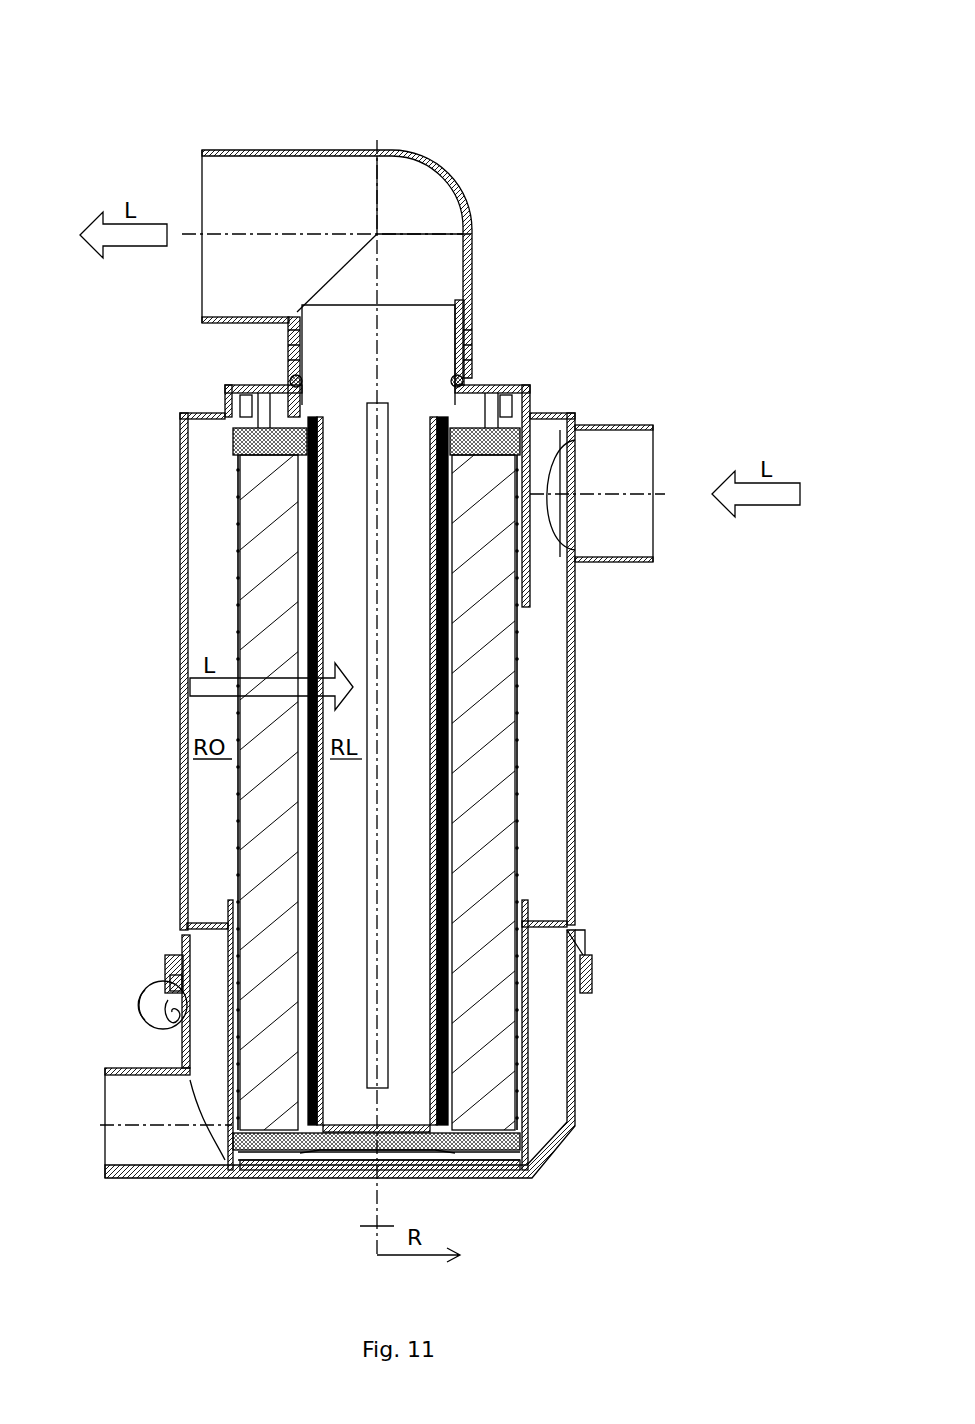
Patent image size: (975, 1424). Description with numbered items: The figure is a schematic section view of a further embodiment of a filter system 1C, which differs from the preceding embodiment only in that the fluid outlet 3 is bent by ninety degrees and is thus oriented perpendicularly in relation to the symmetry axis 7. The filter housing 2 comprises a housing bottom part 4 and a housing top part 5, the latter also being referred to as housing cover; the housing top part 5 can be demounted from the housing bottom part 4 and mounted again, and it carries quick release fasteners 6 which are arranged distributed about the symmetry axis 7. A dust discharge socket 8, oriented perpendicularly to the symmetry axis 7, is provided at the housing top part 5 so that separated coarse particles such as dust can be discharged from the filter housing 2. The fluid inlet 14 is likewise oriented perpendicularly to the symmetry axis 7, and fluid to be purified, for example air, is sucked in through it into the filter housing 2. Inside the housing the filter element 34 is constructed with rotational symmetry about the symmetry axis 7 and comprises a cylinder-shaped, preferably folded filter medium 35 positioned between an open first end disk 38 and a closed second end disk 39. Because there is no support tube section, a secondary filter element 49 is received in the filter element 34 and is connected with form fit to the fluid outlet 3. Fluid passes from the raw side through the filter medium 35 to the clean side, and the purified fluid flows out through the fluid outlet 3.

The filter system 1C is at (368, 74).
The fluid outlet 3 is at (252, 150).
The first end disk 38 is at (513, 390).
The fluid inlet 14 is at (622, 425).
The filter element 34 is at (526, 667).
The filter medium 35 is at (495, 765).
The secondary filter element 49 is at (450, 840).
The housing bottom part 4 is at (573, 883).
The housing top part 5 is at (574, 1058).
The filter housing 2 is at (423, 795).
The quick release fastener 6 is at (140, 1000).
The symmetry axis 7 is at (375, 1226).
The dust discharge socket 8 is at (172, 1180).
The second end disk 39 is at (520, 1182).